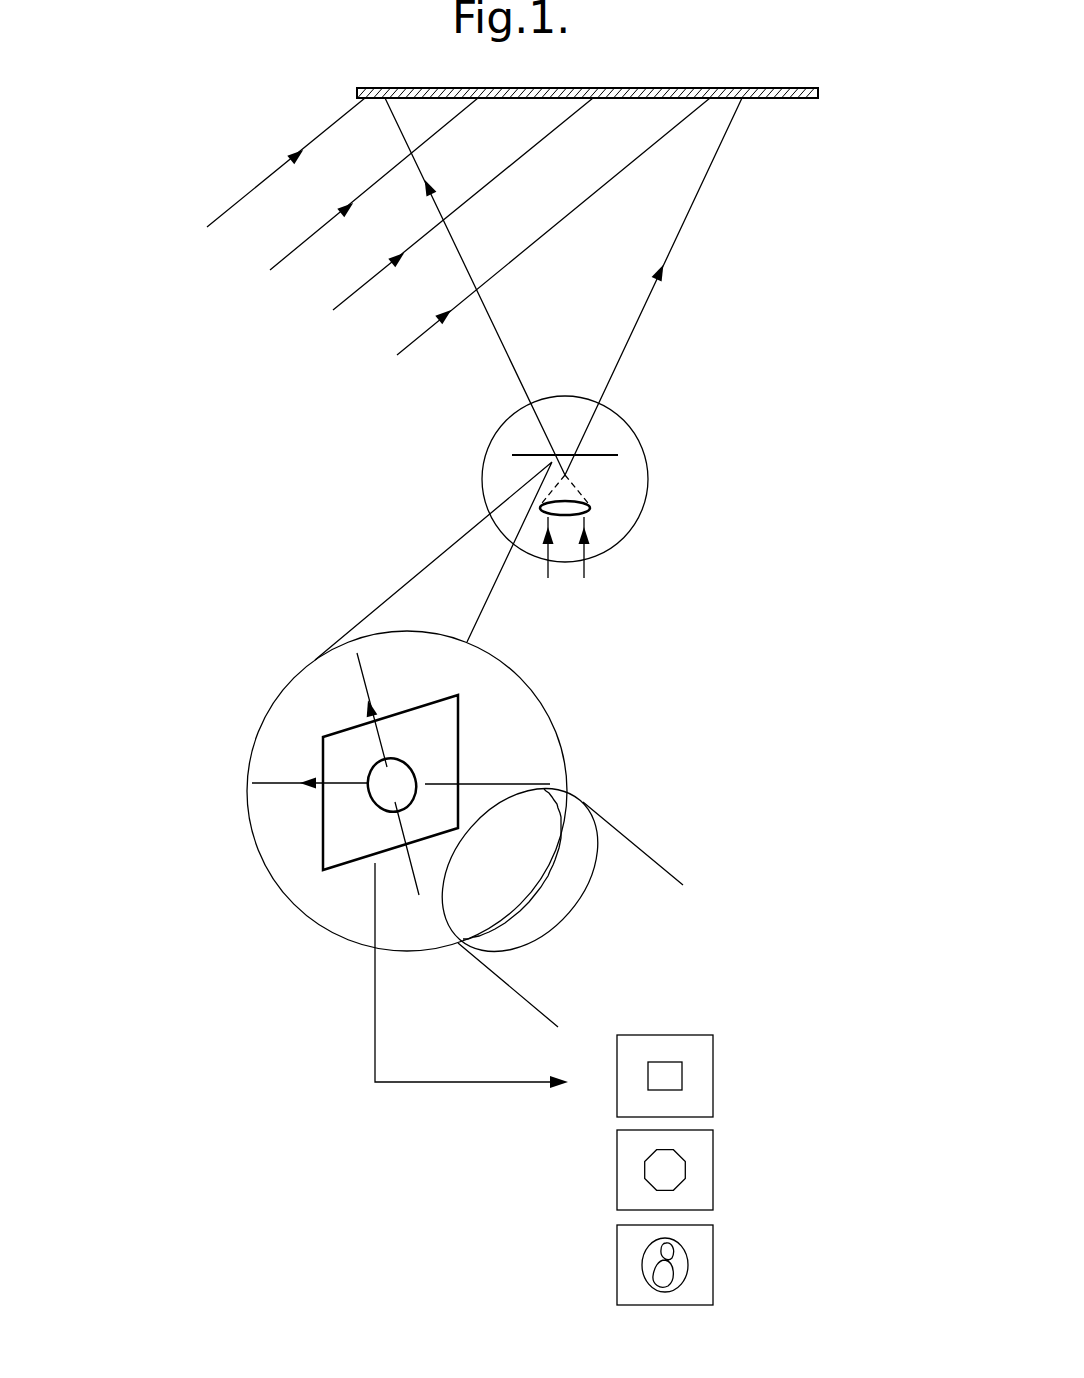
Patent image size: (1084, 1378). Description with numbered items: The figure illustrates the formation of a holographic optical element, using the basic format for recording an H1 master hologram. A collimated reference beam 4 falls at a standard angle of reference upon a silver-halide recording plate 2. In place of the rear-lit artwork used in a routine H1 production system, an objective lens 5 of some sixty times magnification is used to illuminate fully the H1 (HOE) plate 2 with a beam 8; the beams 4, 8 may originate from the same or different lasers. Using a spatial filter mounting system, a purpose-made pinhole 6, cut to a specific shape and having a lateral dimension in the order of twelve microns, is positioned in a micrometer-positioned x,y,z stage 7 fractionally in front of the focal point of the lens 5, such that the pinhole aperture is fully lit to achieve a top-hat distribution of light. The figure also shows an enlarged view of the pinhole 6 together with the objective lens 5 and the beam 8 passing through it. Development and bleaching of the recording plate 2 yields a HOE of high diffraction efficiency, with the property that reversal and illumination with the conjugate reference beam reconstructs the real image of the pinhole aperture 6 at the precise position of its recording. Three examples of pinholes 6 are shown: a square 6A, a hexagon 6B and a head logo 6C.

The recording plate 2 is at (775, 88).
The collimated reference beam 4 is at (245, 197).
The objective lens 5 is at (590, 504).
The pinhole 6 is at (556, 454).
The square pinhole 6A is at (682, 1073).
The hexagon pinhole 6B is at (687, 1170).
The head logo pinhole 6C is at (688, 1262).
The x,y,z stage 7 is at (642, 445).
The beam 8 is at (584, 570).